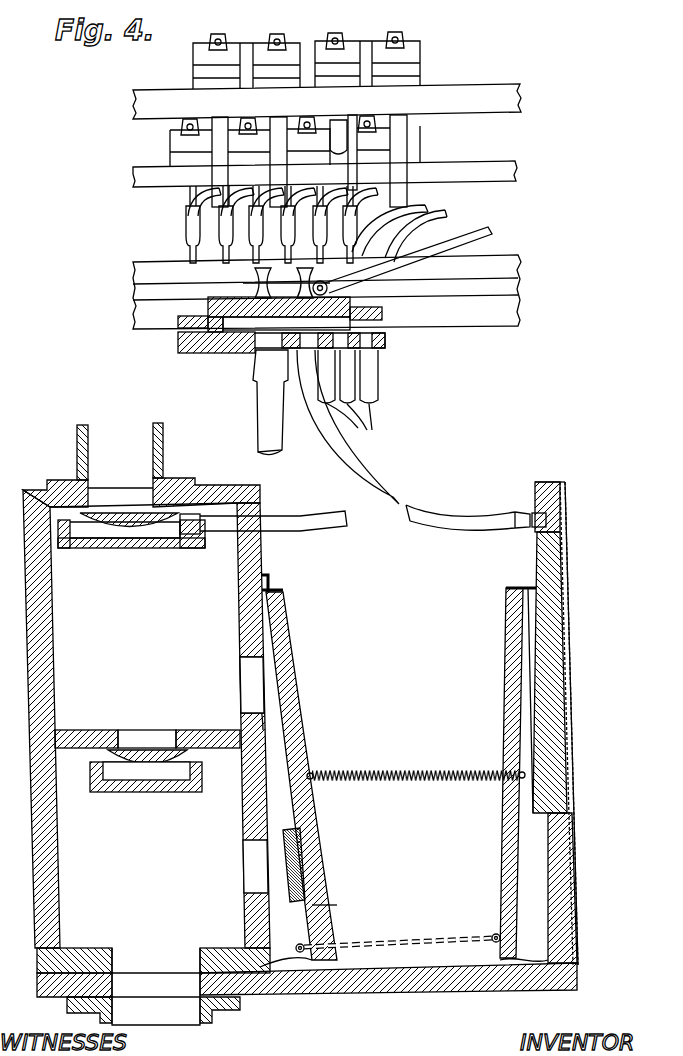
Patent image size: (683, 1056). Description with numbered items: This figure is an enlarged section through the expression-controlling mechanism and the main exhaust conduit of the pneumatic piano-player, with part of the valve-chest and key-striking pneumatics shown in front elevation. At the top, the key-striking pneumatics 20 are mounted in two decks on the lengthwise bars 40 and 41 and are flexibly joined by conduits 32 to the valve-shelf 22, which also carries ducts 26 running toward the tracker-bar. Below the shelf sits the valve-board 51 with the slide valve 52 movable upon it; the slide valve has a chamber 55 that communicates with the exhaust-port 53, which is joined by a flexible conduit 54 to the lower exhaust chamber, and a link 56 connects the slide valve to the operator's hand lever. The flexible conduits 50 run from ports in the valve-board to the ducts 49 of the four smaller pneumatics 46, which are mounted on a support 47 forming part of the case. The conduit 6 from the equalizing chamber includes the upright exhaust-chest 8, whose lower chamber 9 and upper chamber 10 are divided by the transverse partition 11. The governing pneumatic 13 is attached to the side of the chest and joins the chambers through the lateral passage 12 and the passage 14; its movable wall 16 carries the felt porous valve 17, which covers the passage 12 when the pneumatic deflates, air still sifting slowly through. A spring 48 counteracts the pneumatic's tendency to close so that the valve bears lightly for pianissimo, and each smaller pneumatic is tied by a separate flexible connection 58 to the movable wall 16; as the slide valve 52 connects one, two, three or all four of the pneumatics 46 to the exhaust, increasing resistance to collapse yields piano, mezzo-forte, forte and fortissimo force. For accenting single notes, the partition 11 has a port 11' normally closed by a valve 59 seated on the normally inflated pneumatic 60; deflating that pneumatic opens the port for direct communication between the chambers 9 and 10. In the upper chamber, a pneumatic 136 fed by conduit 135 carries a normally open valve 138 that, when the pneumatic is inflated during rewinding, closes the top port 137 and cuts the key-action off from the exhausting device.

The key-striking pneumatics 20 is at (263, 60).
The lengthwise bar 40 is at (484, 88).
The lengthwise bar 41 is at (485, 176).
The conduit 32 is at (396, 182).
The duct 26 is at (237, 246).
The link 56 is at (490, 238).
The valve-shelf 22 is at (510, 300).
The chamber 55 is at (242, 322).
The slide valve 52 is at (212, 318).
The exhaust-port 53 is at (272, 340).
The valve-board 51 is at (386, 344).
The flexible conduit 54 is at (262, 414).
The flexible conduit 50 is at (365, 405).
The exhaust-chest 8 is at (36, 856).
The port 137 is at (118, 500).
The valve 138 is at (157, 522).
The pneumatic 136 is at (132, 532).
The conduit 135 is at (320, 526).
The upper chamber 10 is at (136, 643).
The passage 14 is at (250, 681).
The transverse partition 11 is at (147, 724).
The port 11' is at (147, 723).
The valve 59 is at (160, 753).
The conduit 6 is at (600, 823).
The pneumatic 60 is at (150, 778).
The lower chamber 9 is at (140, 861).
The lateral passage 12 is at (256, 866).
The movable wall 16 is at (306, 811).
The porous valve 17 is at (292, 866).
The governing pneumatic 13 is at (293, 922).
The flexible connection 58 is at (408, 946).
The spring 48 is at (401, 774).
The smaller pneumatics 46 is at (514, 703).
The duct 49 is at (565, 690).
The support 47 is at (565, 874).